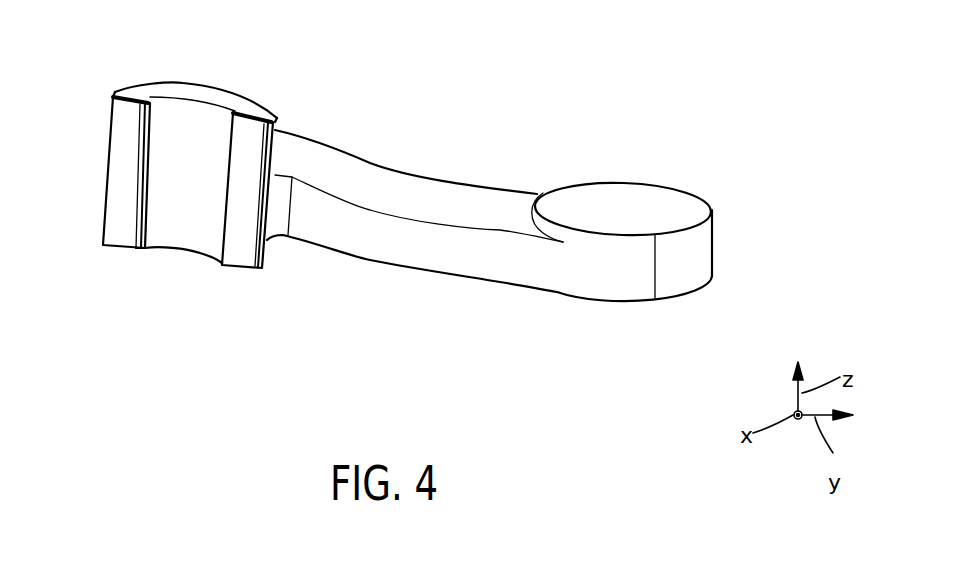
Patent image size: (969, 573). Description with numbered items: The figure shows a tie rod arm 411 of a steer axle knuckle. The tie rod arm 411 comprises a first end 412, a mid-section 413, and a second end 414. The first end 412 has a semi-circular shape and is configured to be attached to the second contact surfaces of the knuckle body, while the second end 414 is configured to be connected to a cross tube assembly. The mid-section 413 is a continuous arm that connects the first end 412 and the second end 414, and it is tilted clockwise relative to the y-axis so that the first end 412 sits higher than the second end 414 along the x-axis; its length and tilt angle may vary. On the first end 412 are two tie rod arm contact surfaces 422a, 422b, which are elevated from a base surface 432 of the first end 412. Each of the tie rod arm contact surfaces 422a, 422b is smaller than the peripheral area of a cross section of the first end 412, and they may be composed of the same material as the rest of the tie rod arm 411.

The tie rod arm 411 is at (399, 175).
The first end 412 is at (200, 112).
The mid-section 413 is at (545, 88).
The second end 414 is at (667, 228).
The tie rod arm contact surface 422a is at (262, 262).
The tie rod arm contact surface 422b is at (127, 213).
The base surface 432 is at (140, 248).